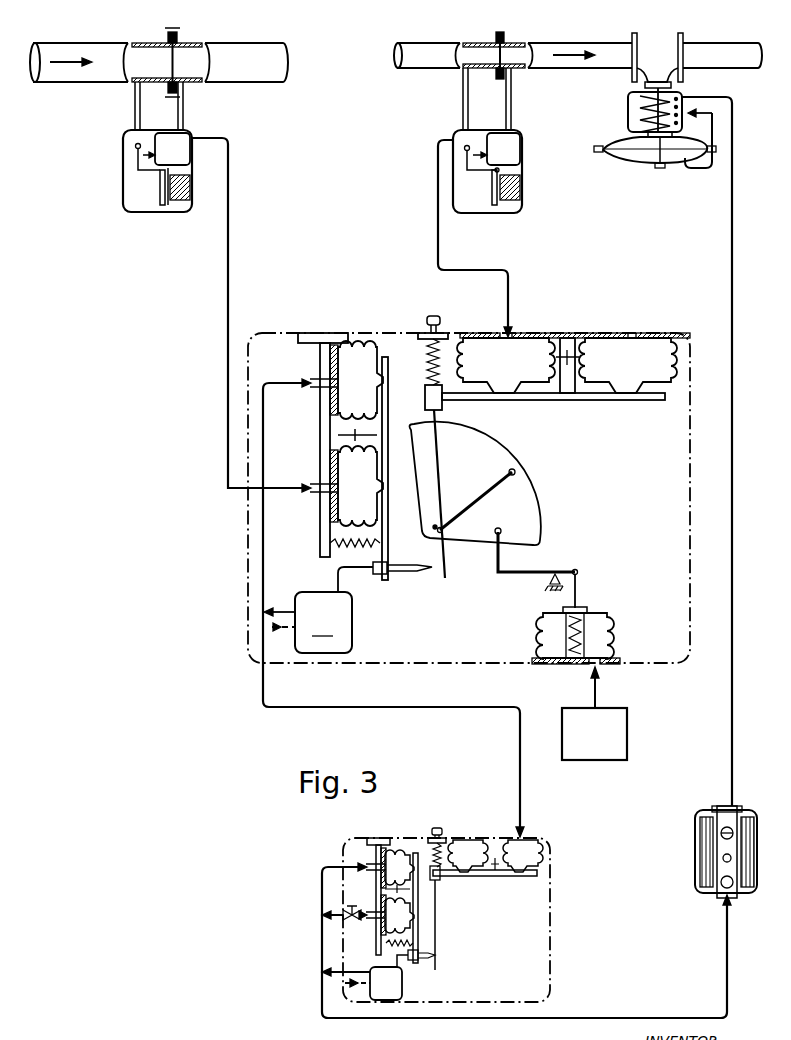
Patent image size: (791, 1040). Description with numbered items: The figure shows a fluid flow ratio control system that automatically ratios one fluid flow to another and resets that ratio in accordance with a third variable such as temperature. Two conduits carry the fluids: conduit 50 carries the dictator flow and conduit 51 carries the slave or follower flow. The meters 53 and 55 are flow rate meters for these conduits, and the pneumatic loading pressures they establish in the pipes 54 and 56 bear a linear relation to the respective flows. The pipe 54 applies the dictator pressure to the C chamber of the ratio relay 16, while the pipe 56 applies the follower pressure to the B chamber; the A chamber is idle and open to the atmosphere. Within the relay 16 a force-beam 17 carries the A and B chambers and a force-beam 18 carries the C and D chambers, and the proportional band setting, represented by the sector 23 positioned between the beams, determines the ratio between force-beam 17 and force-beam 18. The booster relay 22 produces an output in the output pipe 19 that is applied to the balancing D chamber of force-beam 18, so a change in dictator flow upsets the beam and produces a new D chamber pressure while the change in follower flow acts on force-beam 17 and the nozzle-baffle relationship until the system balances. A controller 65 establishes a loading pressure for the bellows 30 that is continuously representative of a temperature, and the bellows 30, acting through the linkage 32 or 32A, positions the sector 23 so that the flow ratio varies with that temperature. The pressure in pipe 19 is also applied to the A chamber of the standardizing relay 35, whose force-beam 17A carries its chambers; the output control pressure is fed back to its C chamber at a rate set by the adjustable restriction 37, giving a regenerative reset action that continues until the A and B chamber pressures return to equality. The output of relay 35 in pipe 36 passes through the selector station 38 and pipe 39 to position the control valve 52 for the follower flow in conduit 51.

The ratio relay 16 is at (387, 332).
The force-beam 17 is at (572, 401).
The force-beam 17A is at (477, 877).
The force-beam 18 is at (390, 399).
The output pipe 19 is at (265, 580).
The booster relay 22 is at (318, 610).
The proportional band sector 23 is at (536, 508).
The bellows 30 is at (612, 631).
The linkage 32 is at (576, 568).
The linkage 32A is at (541, 571).
The standardizing relay 35 is at (551, 926).
The pipe 36 is at (609, 1017).
The adjustable restriction 37 is at (355, 923).
The selector station 38 is at (696, 850).
The pipe 39 is at (731, 237).
The conduit 50 is at (250, 83).
The conduit 51 is at (558, 69).
The control valve 52 is at (618, 126).
The meter 53 is at (122, 155).
The pipe 54 is at (230, 281).
The meter 55 is at (522, 170).
The pipe 56 is at (437, 236).
The controller 65 is at (628, 738).